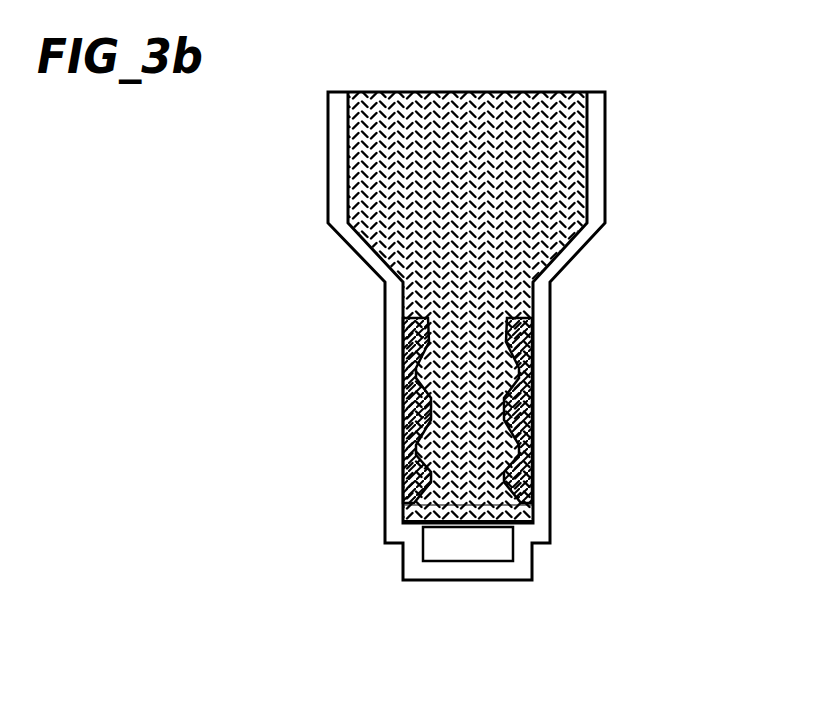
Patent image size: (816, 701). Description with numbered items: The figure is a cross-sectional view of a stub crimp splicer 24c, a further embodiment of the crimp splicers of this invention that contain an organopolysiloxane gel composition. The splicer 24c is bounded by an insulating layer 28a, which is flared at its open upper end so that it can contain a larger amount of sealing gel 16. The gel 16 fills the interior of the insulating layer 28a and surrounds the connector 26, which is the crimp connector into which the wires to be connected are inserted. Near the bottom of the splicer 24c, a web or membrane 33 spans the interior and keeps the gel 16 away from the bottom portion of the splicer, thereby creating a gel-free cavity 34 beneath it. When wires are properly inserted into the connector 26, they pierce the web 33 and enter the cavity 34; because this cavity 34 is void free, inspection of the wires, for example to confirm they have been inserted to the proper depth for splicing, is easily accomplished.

The gel 16 is at (383, 168).
The splicer 24c is at (461, 375).
The connector 26 is at (523, 355).
The insulating layer 28a is at (602, 148).
The web or membrane 33 is at (495, 526).
The gel-free cavity 34 is at (440, 542).